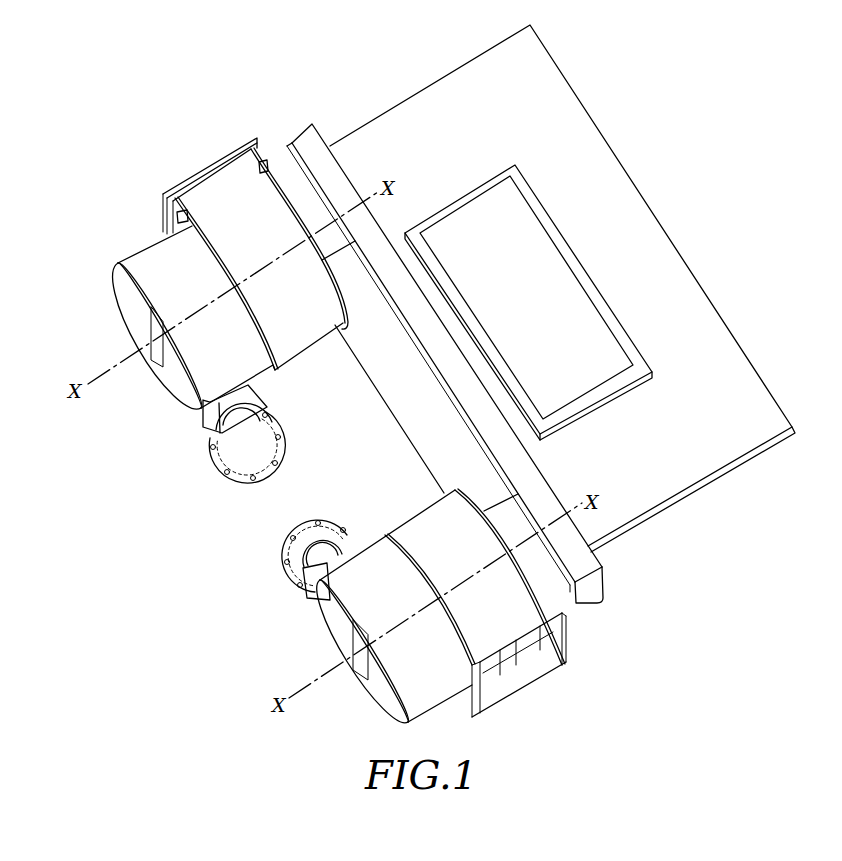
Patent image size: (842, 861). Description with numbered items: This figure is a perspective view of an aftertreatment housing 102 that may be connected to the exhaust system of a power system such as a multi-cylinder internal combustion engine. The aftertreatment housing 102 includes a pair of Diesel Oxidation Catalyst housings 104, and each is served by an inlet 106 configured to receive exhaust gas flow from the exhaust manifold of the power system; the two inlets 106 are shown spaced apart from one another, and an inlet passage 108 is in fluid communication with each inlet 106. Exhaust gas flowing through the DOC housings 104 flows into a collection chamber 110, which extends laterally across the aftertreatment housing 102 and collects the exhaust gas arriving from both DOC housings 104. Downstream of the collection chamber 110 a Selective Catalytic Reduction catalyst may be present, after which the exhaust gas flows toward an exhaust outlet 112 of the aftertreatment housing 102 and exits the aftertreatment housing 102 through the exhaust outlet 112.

The aftertreatment housing 102 is at (716, 152).
The Diesel Oxidation Catalyst housing 104 is at (227, 207).
The inlet 106 is at (242, 477).
The inlet passage 108 is at (220, 436).
The collection chamber 110 is at (347, 203).
The exhaust outlet 112 is at (580, 340).